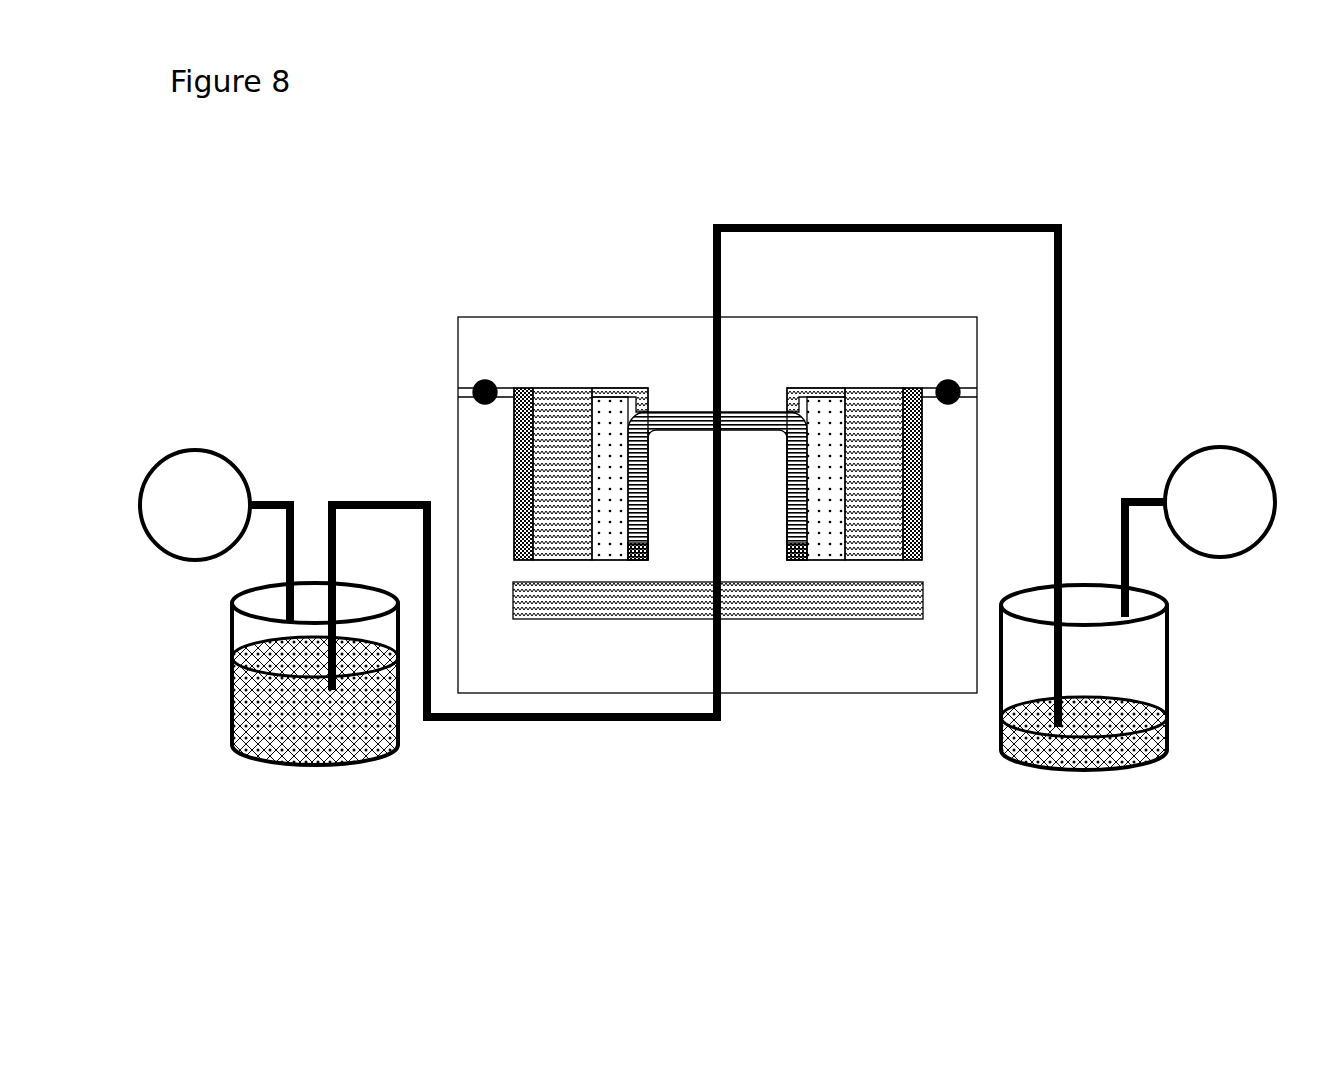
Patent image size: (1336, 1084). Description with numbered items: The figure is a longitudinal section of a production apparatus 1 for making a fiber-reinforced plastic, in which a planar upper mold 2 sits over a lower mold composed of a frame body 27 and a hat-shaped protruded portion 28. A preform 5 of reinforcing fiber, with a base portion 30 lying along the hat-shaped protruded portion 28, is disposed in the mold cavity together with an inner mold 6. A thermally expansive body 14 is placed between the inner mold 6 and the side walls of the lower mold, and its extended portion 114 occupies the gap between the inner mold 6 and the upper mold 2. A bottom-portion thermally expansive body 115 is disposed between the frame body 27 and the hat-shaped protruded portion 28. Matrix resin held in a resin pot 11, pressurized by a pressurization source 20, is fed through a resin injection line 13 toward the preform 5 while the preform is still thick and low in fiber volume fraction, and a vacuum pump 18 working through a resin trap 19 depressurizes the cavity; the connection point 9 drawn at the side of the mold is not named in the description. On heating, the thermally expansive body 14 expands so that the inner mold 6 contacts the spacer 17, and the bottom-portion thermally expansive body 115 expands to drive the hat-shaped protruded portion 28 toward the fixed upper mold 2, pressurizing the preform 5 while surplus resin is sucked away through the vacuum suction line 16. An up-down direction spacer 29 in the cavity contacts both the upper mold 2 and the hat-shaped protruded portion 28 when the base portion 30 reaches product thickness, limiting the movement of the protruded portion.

The production apparatus 1 is at (470, 267).
The upper mold 2 is at (865, 362).
The preform 5 is at (672, 410).
The inner mold 6 is at (620, 505).
The electrical connection 9 is at (977, 383).
The resin pot 11 is at (350, 750).
The resin injection line 13 is at (595, 722).
The thermally expansive body 14 is at (627, 613).
The vacuum suction line 16 is at (912, 225).
The spacer 17 is at (792, 560).
The vacuum pump 18 is at (1227, 557).
The resin trap 19 is at (1105, 750).
The pressurization source 20 is at (195, 577).
The frame body 27 is at (837, 665).
The hat-shaped protruded portion 28 is at (737, 530).
The up-down direction spacer 29 is at (923, 470).
The base portion 30 is at (765, 410).
The extended portion 114 is at (617, 388).
The bottom-portion thermally expansive body 115 is at (555, 450).